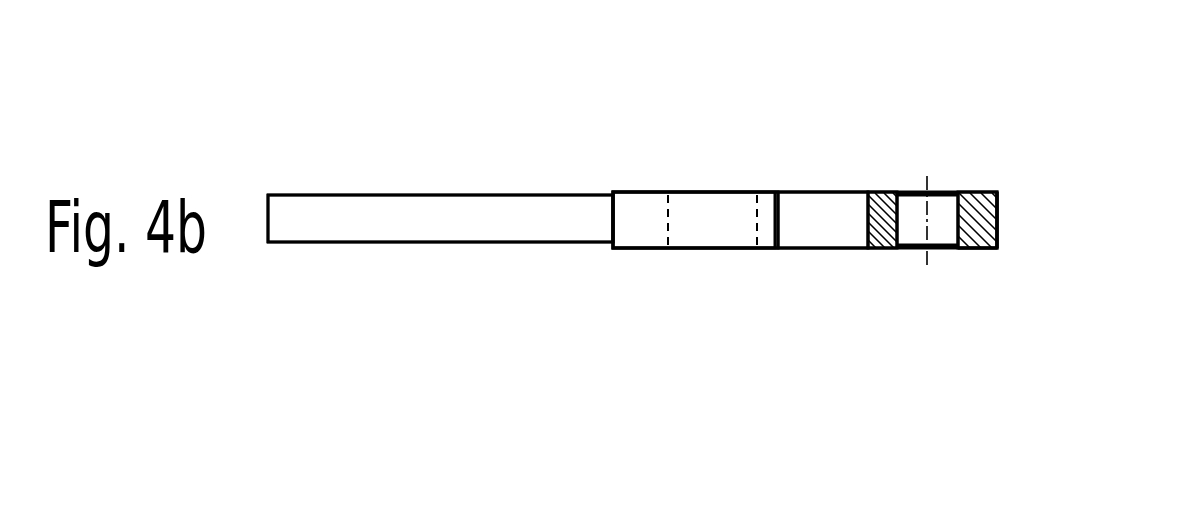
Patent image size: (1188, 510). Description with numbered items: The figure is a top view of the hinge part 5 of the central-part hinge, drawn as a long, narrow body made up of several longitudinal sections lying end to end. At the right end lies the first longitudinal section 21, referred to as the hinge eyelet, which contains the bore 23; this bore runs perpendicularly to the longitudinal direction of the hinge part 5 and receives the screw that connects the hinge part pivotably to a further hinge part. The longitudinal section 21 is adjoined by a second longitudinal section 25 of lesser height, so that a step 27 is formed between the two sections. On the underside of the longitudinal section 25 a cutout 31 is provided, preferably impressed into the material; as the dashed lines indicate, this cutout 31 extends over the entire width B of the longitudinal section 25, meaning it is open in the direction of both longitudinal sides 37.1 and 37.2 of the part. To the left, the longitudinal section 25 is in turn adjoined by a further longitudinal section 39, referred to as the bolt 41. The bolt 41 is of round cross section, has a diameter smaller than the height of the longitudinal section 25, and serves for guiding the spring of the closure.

The hinge part 5 is at (276, 150).
The bolt 41 is at (361, 210).
The cutout 31 is at (712, 232).
The step 27 is at (782, 215).
The bore 23 is at (936, 222).
The first longitudinal section 21 is at (996, 85).
The second longitudinal section 25 is at (775, 106).
The further longitudinal section 39 is at (608, 303).
The longitudinal side 37.1 is at (976, 191).
The longitudinal side 37.2 is at (977, 253).
The width B is at (1105, 194).